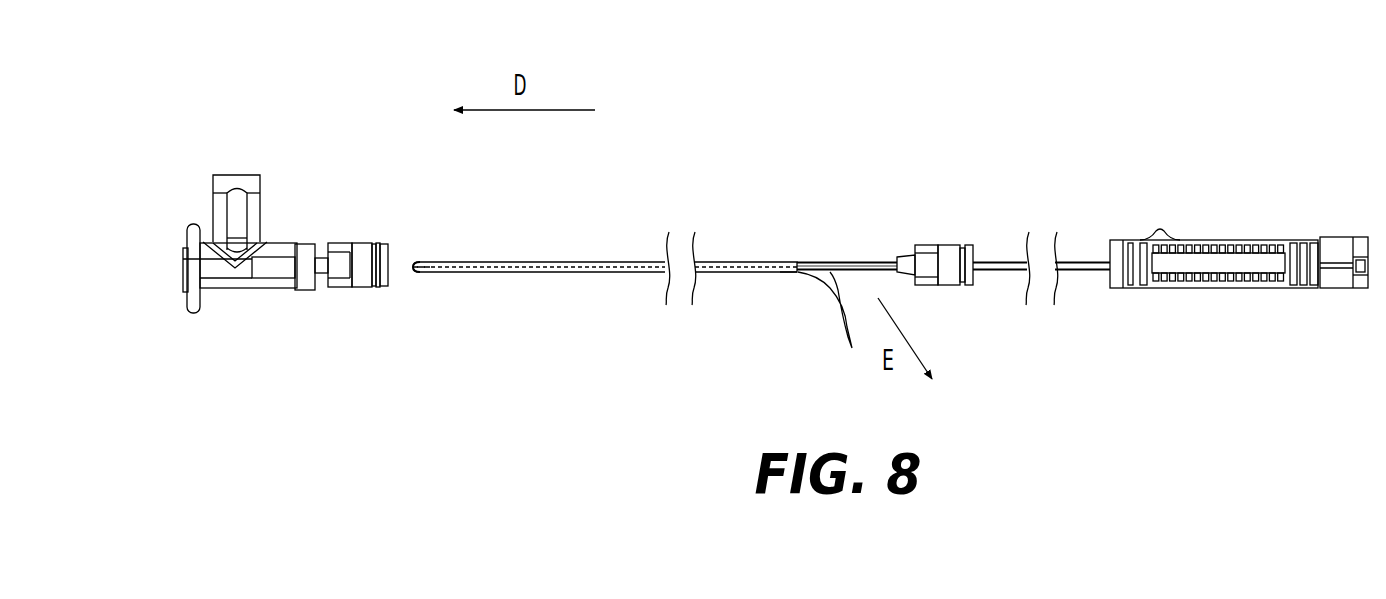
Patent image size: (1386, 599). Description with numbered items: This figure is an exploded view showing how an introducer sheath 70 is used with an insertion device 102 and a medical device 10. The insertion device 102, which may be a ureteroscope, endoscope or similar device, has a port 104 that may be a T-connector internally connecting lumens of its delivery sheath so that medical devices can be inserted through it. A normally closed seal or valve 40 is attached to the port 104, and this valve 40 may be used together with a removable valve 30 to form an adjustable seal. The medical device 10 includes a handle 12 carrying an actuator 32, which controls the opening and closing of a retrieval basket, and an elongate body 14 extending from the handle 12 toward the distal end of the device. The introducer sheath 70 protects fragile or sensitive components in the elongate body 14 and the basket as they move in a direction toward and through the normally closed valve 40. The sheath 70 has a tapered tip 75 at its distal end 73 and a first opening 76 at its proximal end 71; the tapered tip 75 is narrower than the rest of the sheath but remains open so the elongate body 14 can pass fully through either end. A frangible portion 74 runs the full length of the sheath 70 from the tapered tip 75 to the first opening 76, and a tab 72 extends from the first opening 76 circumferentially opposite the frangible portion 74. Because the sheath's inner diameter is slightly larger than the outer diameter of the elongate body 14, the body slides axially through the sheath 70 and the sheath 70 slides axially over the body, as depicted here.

The medical device 10 is at (1239, 164).
The handle 12 is at (1214, 227).
The elongate body 14 is at (860, 250).
The valve 30 is at (948, 245).
The actuator 32 is at (1162, 229).
The normally closed seal or valve 40 is at (353, 290).
The introducer sheath 70 is at (632, 283).
The proximal end 71 is at (795, 290).
The tab 72 is at (843, 340).
The distal end 73 is at (440, 284).
The frangible portion 74 is at (608, 262).
The tapered tip 75 is at (415, 261).
The first opening 76 is at (799, 260).
The insertion device 102 is at (254, 298).
The port 104 is at (237, 290).